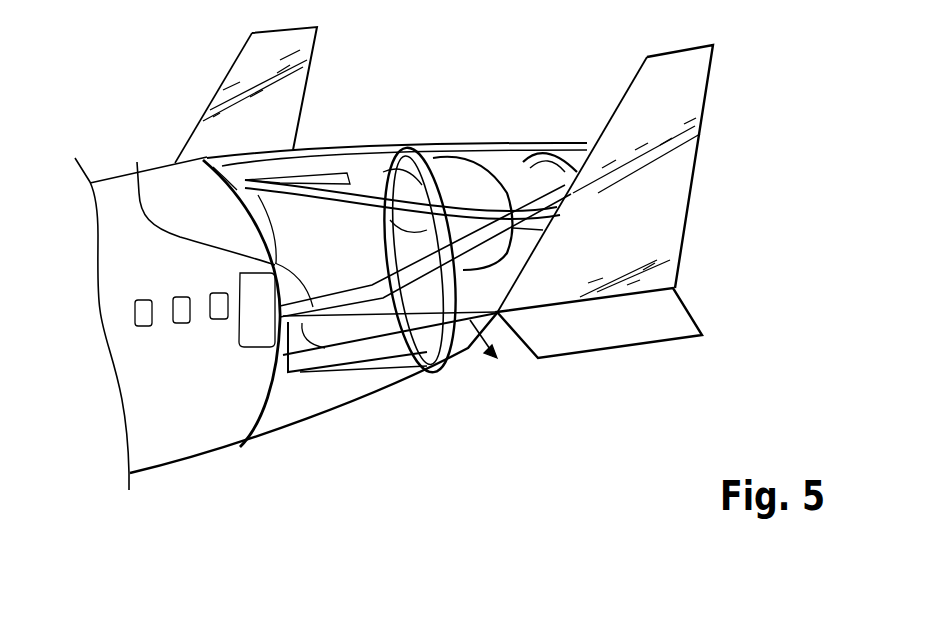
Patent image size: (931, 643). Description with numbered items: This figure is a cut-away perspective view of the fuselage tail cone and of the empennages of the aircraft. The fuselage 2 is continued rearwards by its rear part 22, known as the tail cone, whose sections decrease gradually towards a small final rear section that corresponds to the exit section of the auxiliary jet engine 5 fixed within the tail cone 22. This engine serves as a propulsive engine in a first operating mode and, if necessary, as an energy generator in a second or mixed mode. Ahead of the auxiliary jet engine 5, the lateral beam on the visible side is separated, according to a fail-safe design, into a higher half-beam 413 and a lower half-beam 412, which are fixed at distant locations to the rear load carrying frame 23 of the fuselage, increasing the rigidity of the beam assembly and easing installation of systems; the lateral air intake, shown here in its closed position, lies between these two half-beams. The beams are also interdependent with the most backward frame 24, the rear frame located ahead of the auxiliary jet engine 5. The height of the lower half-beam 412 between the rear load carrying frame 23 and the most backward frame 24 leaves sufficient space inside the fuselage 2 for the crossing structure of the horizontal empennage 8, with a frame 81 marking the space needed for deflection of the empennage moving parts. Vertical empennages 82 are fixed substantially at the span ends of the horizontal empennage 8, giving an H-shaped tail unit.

The fuselage 2 is at (172, 393).
The rear part of the fuselage 22 is at (232, 480).
The rear load carrying frame 23 is at (256, 435).
The most backward frame 24 is at (407, 142).
The auxiliary jet engine 5 is at (487, 175).
The horizontal empennage 8 is at (500, 282).
The frame 81 is at (337, 368).
The vertical empennages 82 is at (247, 60).
The lower half-beam 412 is at (138, 178).
The higher half-beam 413 is at (213, 155).